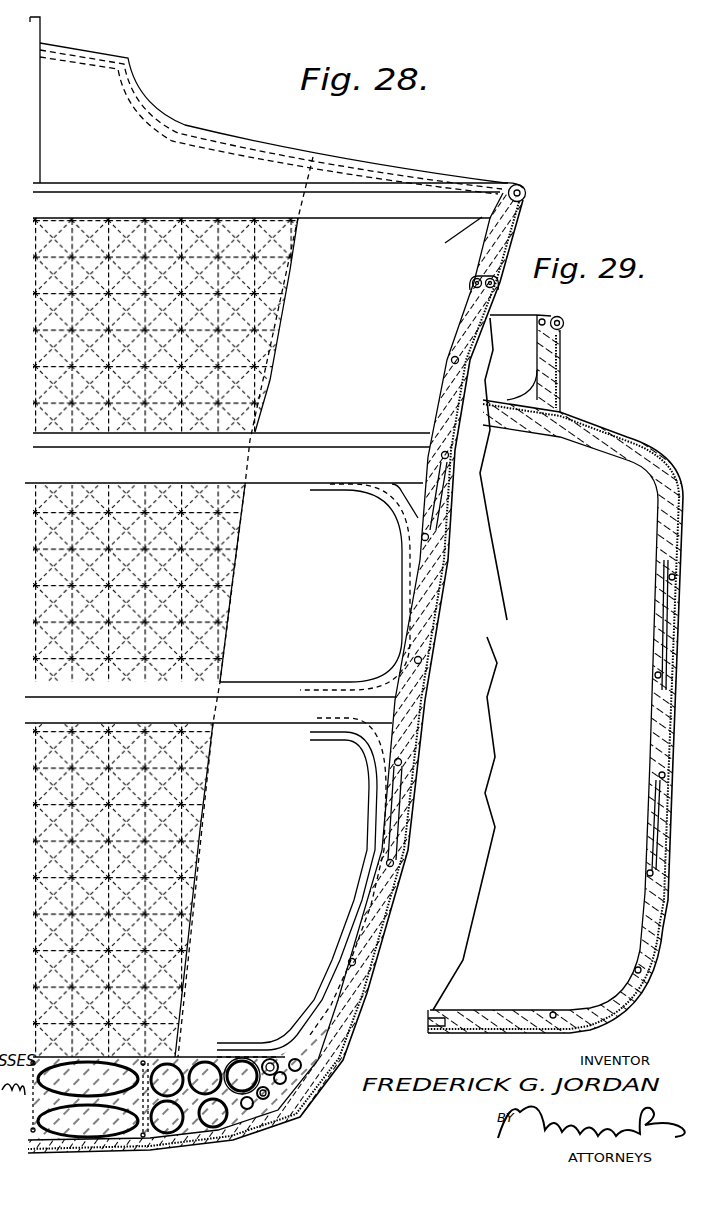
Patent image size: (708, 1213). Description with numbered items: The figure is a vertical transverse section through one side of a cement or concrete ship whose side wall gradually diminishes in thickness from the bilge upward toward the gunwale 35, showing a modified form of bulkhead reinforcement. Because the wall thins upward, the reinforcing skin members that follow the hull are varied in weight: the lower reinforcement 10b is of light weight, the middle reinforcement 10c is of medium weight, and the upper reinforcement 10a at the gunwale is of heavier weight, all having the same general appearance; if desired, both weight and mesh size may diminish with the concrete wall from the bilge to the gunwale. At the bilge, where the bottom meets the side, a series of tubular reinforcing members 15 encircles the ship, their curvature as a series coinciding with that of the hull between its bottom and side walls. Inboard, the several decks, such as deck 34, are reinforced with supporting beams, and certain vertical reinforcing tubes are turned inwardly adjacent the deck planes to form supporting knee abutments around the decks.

In FIG. 28, the upper channel section of hull framing 10a is at (455, 360).
In FIG. 29, the upper channel section of hull framing 10a is at (607, 430).
In FIG. 28, the lower reinforcement 10b is at (352, 962).
In FIG. 28, the middle reinforcement 10c is at (425, 537).
In FIG. 28, the deck 34 is at (300, 453).
In FIG. 28, the gunwale 35 is at (252, 707).
In FIG. 28, the tubular reinforcing members 15 is at (322, 1113).